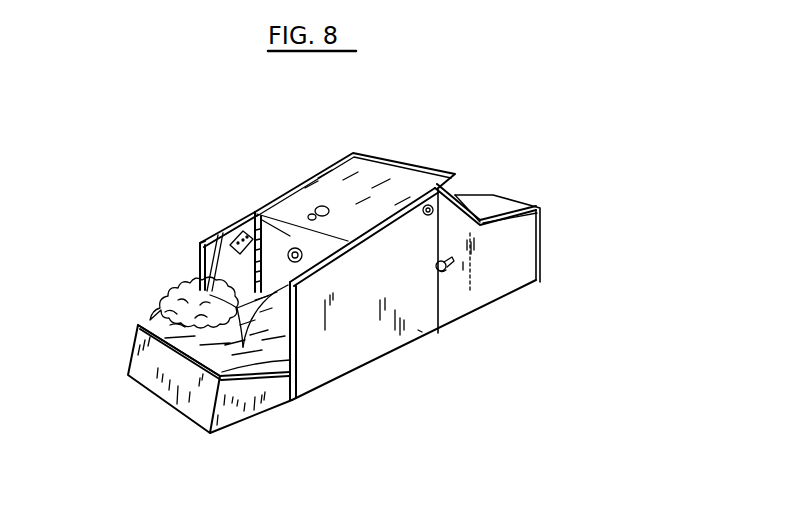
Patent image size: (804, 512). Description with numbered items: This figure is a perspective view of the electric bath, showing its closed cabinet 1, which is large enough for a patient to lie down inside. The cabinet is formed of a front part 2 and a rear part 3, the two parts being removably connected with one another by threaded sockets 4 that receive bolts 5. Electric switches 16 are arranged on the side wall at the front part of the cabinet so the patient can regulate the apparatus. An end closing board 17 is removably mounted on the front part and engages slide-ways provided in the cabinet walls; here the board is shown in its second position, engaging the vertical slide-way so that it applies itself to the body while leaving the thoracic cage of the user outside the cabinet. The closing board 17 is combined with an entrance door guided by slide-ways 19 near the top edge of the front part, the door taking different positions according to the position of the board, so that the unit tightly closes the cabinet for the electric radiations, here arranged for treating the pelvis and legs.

The closed cabinet 1 is at (487, 300).
The front part 2 is at (341, 368).
The rear part 3 is at (496, 200).
The threaded socket 4 is at (452, 262).
The bolt 5 is at (443, 271).
The electric switch 16 is at (240, 237).
The end closing board 17 is at (253, 211).
The slide-way 19 is at (394, 172).